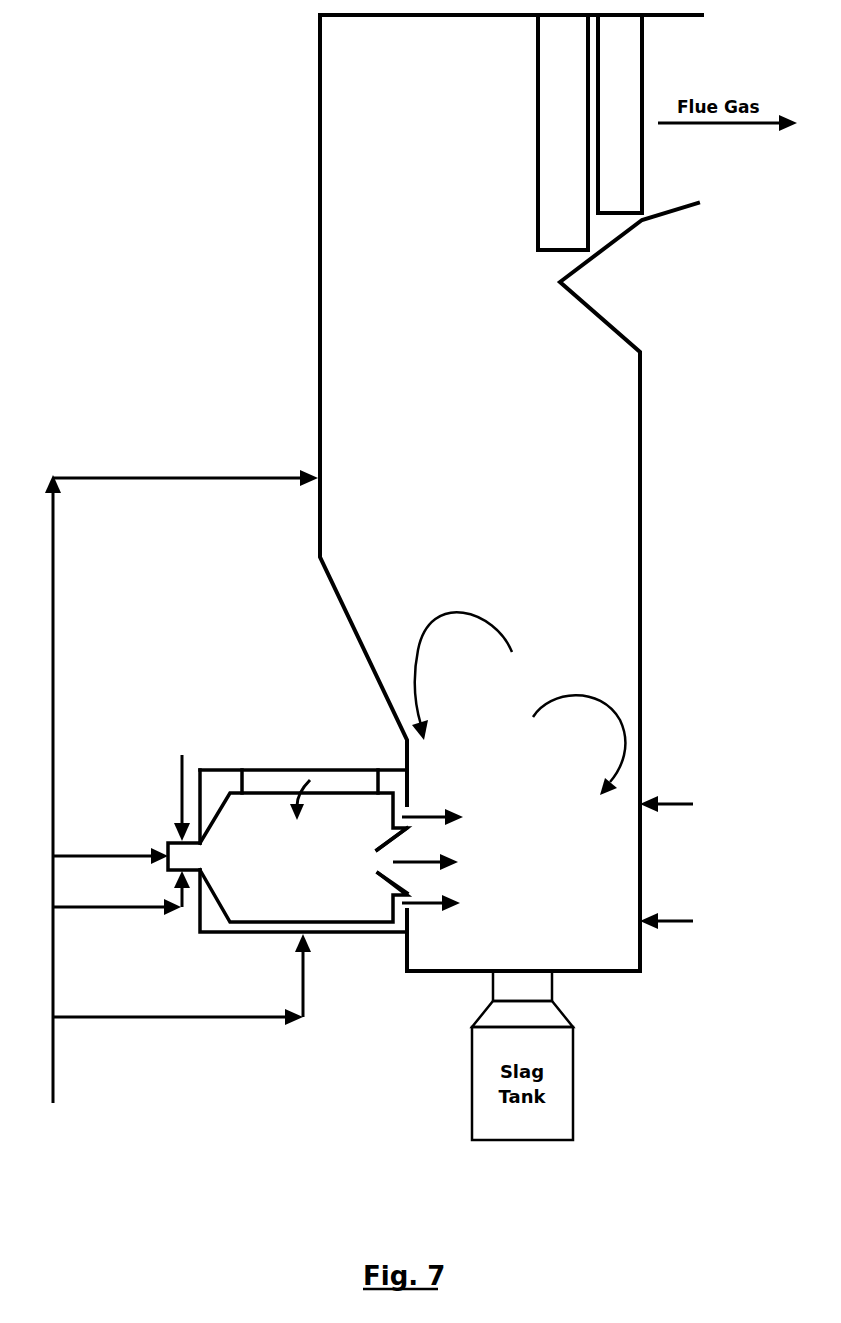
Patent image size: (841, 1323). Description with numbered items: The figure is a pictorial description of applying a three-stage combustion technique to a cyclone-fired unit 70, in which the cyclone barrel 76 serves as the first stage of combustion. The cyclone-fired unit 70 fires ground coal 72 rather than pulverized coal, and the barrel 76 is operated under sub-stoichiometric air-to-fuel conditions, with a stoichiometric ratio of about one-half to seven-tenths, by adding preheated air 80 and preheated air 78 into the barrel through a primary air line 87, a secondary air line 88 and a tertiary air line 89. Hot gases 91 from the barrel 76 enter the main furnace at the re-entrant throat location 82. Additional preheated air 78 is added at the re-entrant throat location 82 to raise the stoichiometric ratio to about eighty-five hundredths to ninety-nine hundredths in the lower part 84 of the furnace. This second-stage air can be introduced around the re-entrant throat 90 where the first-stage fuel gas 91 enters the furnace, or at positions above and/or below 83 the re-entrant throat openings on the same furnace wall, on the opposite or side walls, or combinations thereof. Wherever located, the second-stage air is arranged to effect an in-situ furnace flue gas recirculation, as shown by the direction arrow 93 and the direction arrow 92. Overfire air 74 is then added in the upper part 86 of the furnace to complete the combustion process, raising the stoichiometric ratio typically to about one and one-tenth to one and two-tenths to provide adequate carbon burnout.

The cyclone-fired unit 70 is at (648, 597).
The ground coal 72 is at (180, 783).
The overfire air 74 is at (240, 478).
The cyclone barrel 76 is at (260, 937).
The preheated air 78 is at (305, 970).
The preheated air 80 is at (53, 1042).
The re-entrant throat location 82 is at (427, 812).
The locations above and/or below the re-entrant throat openings 83 is at (675, 808).
The lower part of the furnace 84 is at (531, 706).
The upper part of the furnace 86 is at (484, 393).
The primary air line 87 is at (87, 908).
The secondary air line 88 is at (293, 785).
The tertiary air line 89 is at (118, 853).
The re-entrant throat 90 is at (393, 880).
The hot gases 91 is at (422, 858).
The direction arrow 92 is at (482, 625).
The direction arrow 93 is at (573, 712).